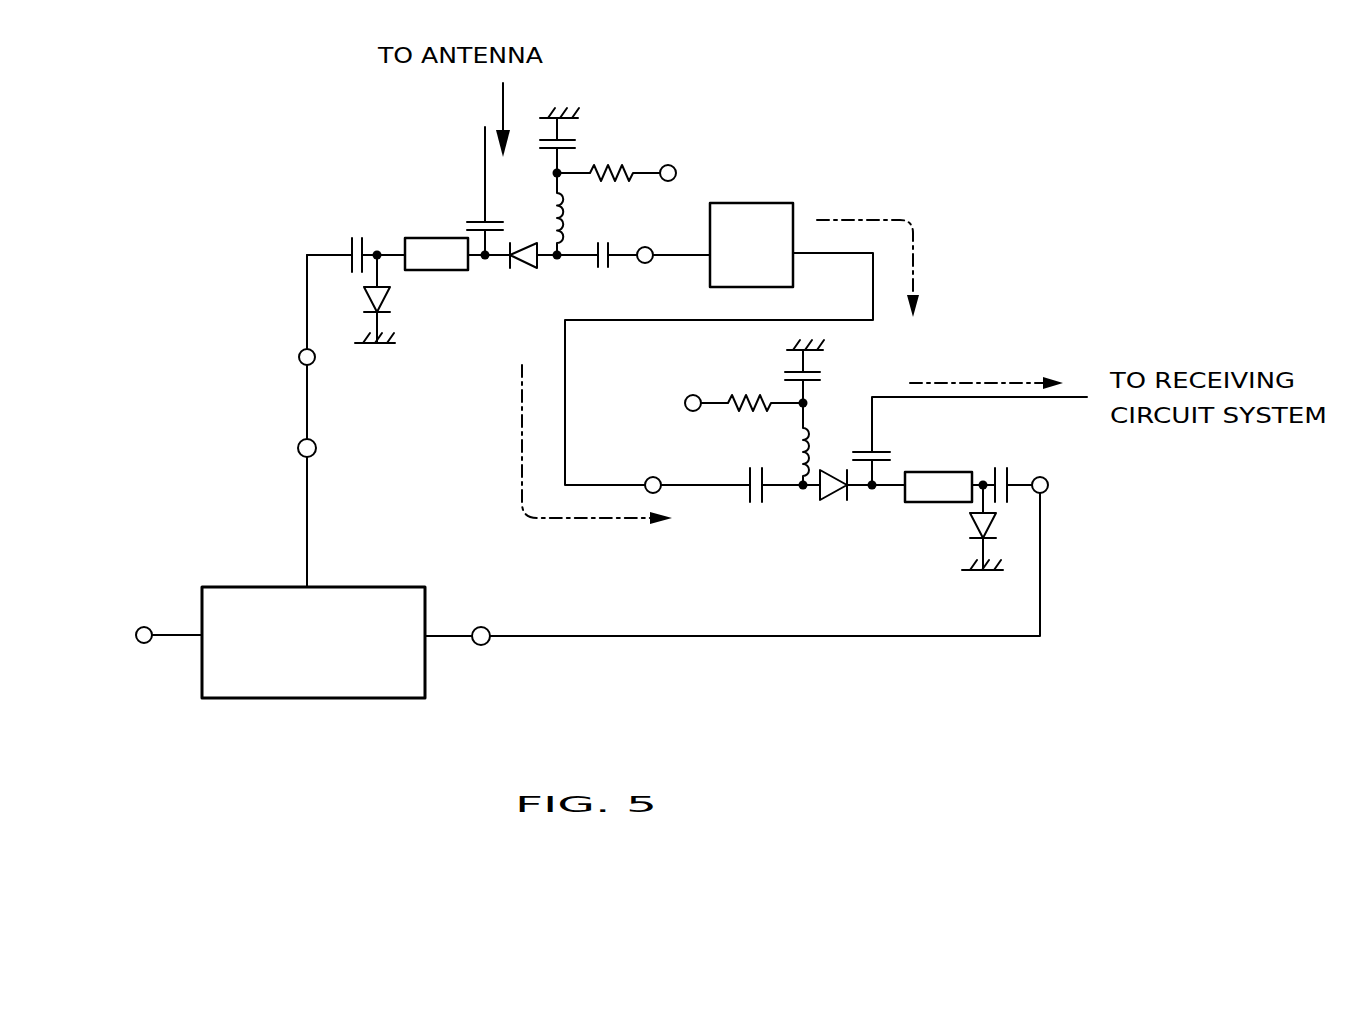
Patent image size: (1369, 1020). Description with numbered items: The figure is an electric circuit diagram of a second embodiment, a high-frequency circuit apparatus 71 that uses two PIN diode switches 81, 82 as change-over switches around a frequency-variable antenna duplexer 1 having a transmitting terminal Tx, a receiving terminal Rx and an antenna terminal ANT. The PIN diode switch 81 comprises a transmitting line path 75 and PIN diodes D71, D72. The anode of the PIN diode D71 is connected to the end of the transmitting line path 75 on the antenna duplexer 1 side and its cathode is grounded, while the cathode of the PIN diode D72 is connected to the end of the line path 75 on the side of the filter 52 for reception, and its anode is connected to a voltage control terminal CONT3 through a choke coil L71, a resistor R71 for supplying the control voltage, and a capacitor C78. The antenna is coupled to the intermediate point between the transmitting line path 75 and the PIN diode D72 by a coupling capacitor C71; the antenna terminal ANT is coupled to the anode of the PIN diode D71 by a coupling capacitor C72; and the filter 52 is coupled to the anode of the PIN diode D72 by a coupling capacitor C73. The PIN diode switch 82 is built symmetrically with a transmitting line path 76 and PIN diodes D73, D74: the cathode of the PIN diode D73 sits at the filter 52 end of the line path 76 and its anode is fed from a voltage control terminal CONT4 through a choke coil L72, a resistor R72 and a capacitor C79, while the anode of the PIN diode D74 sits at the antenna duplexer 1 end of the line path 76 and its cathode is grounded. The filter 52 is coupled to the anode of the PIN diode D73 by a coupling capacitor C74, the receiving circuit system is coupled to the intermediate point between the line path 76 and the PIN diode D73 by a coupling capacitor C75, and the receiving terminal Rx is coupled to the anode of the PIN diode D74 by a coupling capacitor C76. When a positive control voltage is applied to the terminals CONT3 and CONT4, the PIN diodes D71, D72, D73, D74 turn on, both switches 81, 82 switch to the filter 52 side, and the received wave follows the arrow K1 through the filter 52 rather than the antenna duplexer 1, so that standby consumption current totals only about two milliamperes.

The antenna duplexer 1 is at (309, 700).
The high-frequency circuit apparatus 71 is at (240, 219).
The PIN diode switch 81 is at (372, 172).
The PIN diode switch 82 is at (950, 337).
The filter for reception 52 is at (777, 203).
The transmitting line path 75 is at (447, 272).
The transmitting line path 76 is at (905, 503).
The coupling capacitor C71 is at (480, 222).
The coupling capacitor C72 is at (350, 245).
The coupling capacitor C73 is at (620, 247).
The coupling capacitor C74 is at (748, 505).
The coupling capacitor C75 is at (885, 452).
The coupling capacitor C76 is at (1012, 470).
The capacitor C78 is at (555, 148).
The capacitor C79 is at (815, 375).
The PIN diode D71 is at (387, 297).
The PIN diode D72 is at (532, 270).
The PIN diode D73 is at (830, 500).
The PIN diode D74 is at (970, 540).
The choke coil L71 is at (566, 218).
The choke coil L72 is at (797, 445).
The resistor for supplying the control voltage R71 is at (610, 165).
The resistor for supplying a control voltage R72 is at (728, 398).
The arrow K1 is at (903, 222).
The voltage control terminal CONT3 is at (670, 165).
The voltage control terminal CONT4 is at (685, 403).
The antenna terminal ANT is at (298, 447).
The transmitting terminal Tx is at (150, 627).
The receiving terminal Rx is at (481, 646).